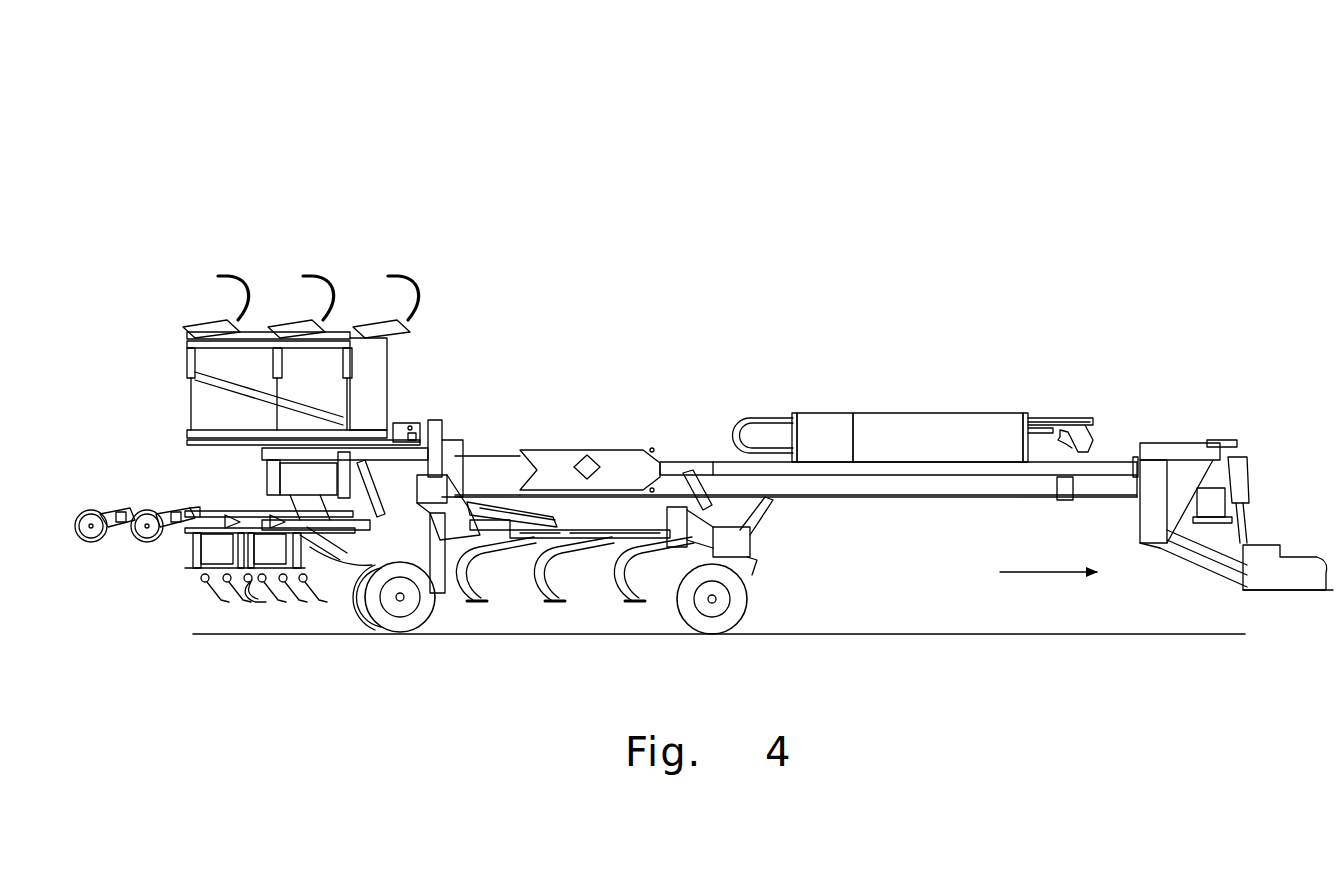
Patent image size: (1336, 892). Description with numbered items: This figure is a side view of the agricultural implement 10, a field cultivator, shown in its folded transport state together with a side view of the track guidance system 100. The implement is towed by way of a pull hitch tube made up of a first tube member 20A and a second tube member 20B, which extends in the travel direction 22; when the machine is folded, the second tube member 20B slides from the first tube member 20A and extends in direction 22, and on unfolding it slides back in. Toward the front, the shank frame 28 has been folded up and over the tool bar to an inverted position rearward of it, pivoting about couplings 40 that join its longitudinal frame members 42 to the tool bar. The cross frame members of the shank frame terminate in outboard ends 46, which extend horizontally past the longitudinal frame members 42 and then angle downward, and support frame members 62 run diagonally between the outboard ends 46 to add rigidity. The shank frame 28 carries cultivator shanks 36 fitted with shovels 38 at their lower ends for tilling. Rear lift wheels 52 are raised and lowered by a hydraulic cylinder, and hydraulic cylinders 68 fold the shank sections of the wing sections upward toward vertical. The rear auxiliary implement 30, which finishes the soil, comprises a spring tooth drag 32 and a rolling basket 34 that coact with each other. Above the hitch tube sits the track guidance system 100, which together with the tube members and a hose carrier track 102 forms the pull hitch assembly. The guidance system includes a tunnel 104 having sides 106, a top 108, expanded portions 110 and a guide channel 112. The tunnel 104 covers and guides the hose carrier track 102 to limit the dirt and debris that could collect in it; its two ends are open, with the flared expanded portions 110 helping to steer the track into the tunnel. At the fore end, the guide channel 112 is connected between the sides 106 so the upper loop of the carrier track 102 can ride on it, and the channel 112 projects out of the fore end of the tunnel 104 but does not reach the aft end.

The agricultural implement 10 is at (808, 278).
The first tube member 20A is at (820, 493).
The second tube member 20B is at (1122, 493).
The travel direction 22 is at (1038, 578).
The shank frame 28 is at (405, 343).
The rear auxiliary implement 30 is at (212, 605).
The spring tooth drag 32 is at (283, 600).
The rolling basket 34 is at (146, 505).
The cultivator shanks 36 is at (553, 578).
The shovels 38 is at (565, 605).
The couplings 40 is at (410, 410).
The longitudinal frame members 42 is at (228, 448).
The outboard ends 46 is at (186, 395).
The rear lift wheels 52 is at (343, 627).
The support frame members 62 is at (258, 396).
The hydraulic cylinders 68 is at (493, 507).
The track guidance system 100 is at (912, 382).
The hose carrier track 102 is at (748, 418).
The tunnel 104 is at (877, 412).
The sides 106 is at (933, 454).
The top 108 is at (953, 412).
The expanded portions 110 is at (793, 413).
The guide channel 112 is at (1043, 433).